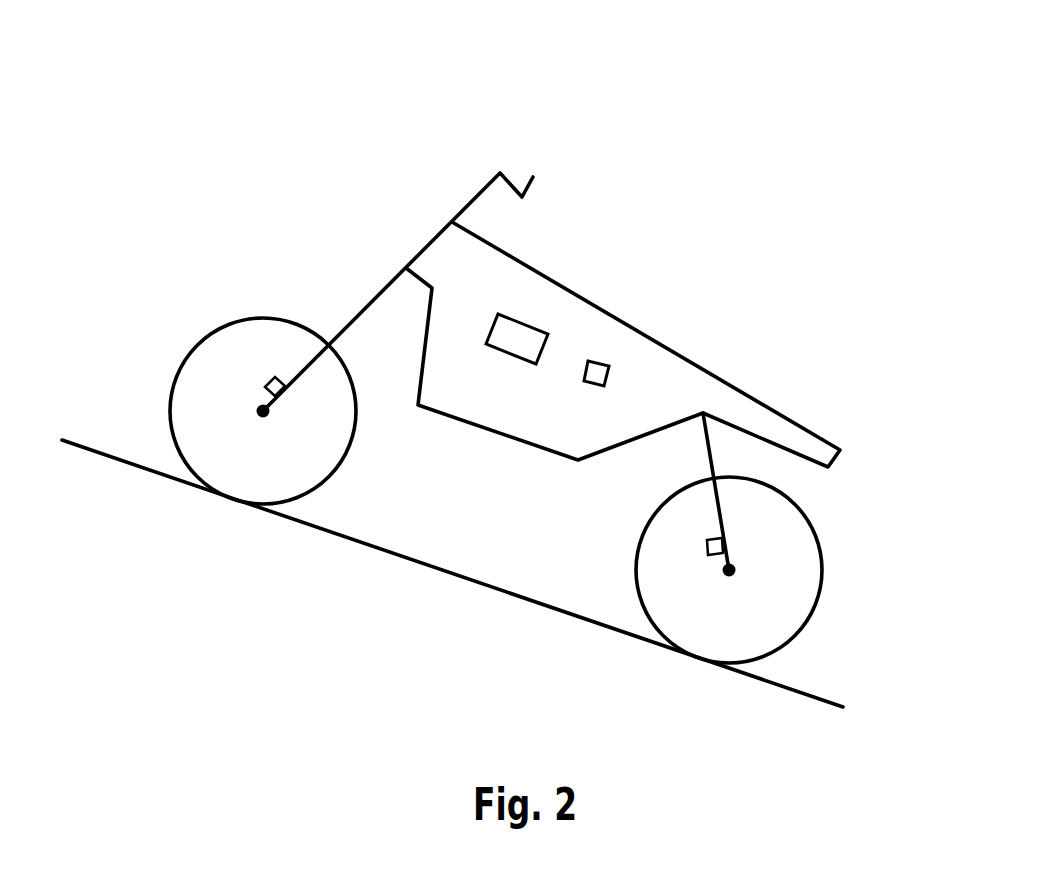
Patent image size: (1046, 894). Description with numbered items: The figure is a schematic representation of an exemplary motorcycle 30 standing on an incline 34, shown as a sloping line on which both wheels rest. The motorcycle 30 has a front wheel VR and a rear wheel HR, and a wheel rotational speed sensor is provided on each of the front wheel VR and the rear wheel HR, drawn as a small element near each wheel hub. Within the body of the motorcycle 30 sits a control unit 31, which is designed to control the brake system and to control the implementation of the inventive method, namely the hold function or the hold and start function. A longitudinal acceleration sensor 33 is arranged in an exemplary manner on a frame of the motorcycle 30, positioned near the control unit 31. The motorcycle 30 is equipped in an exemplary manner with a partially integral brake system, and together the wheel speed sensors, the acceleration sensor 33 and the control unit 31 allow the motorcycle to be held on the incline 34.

The motorcycle 30 is at (410, 138).
The control unit 31 is at (520, 333).
The longitudinal acceleration sensor 33 is at (605, 362).
The incline 34 is at (272, 591).
The front wheel VR is at (285, 320).
The rear wheel HR is at (817, 522).